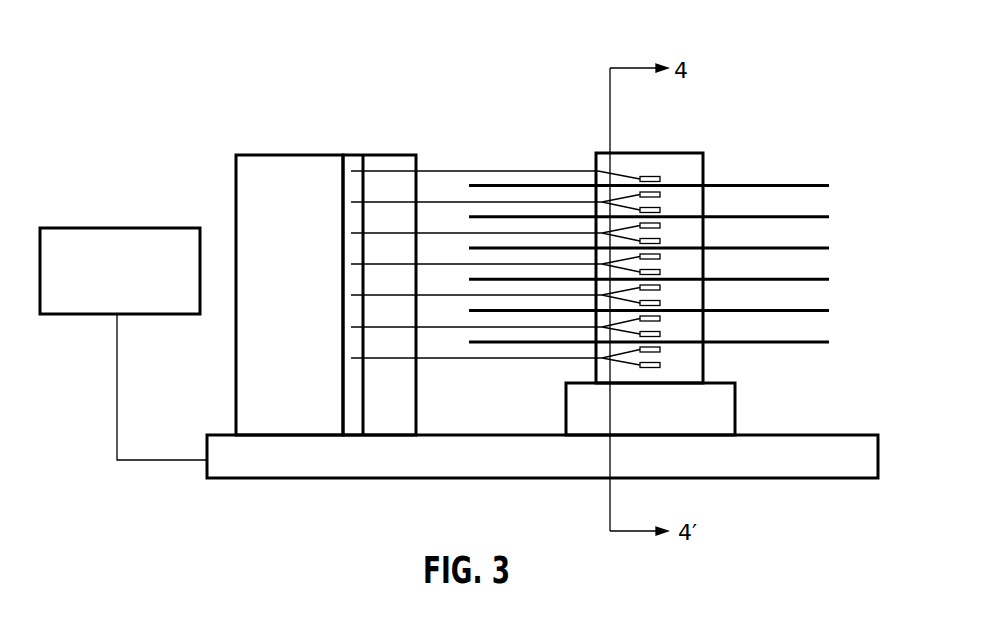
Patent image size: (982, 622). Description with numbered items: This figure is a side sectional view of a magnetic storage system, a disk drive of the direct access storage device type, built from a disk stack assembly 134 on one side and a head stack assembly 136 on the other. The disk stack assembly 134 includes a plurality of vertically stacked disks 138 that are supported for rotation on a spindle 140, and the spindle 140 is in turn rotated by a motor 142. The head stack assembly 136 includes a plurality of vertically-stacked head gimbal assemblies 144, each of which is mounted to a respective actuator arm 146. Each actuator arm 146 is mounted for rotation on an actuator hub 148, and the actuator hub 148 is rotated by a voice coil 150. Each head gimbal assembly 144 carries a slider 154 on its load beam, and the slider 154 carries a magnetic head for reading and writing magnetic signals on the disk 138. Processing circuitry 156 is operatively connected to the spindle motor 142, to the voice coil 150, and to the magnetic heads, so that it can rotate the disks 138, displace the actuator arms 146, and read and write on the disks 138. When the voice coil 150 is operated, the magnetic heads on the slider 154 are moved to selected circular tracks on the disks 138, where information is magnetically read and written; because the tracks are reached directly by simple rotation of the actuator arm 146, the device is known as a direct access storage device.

The disk stack assembly 134 is at (803, 78).
The head stack assembly 136 is at (296, 78).
The disks 138 is at (817, 187).
The spindle 140 is at (658, 153).
The motor 142 is at (735, 410).
The head gimbal assemblies 144 is at (613, 203).
The actuator arms 146 is at (555, 170).
The actuator hub 148 is at (402, 153).
The voice coil 150 is at (280, 155).
The slider 154 is at (662, 210).
The processing circuitry 156 is at (100, 228).